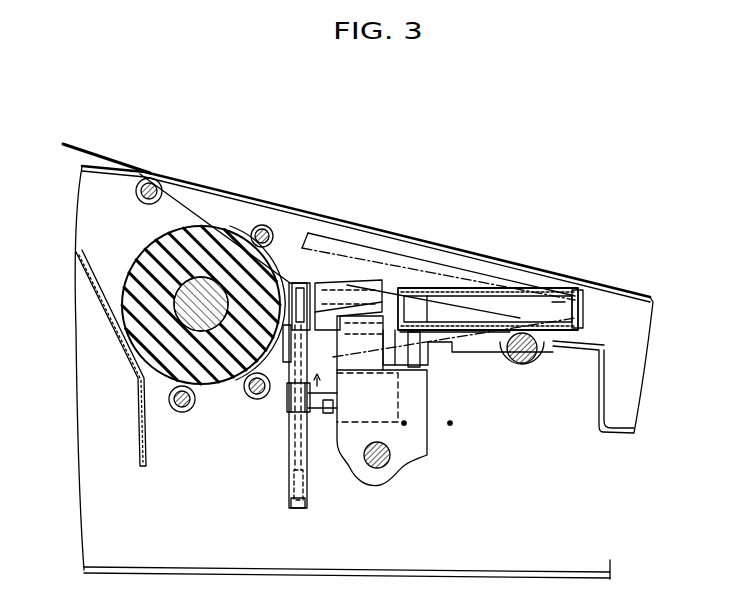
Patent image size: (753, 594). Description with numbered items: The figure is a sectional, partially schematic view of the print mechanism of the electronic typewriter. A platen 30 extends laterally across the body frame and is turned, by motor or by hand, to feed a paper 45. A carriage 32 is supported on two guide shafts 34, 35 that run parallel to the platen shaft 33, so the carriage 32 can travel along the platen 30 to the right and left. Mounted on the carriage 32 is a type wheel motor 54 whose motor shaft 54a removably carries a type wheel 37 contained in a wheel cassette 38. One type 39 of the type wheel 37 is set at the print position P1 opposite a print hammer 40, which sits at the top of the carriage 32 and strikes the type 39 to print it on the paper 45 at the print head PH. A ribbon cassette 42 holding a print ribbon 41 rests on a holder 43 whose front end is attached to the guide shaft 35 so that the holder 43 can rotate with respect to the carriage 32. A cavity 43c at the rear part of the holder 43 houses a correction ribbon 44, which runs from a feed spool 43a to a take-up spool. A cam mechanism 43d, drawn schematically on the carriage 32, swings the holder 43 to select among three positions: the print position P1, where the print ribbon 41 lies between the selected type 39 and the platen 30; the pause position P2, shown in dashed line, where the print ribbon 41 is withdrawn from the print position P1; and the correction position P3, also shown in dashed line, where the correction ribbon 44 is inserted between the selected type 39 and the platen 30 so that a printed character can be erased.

The platen 30 is at (188, 226).
The carriage 32 is at (430, 470).
The platen shaft 33 is at (140, 268).
The guide shaft 34 is at (379, 465).
The guide shaft 35 is at (523, 364).
The type wheel 37 is at (290, 443).
The wheel cassette 38 is at (306, 502).
The type 39 is at (294, 480).
The print hammer 40 is at (340, 283).
The print ribbon 41 is at (301, 280).
The ribbon cassette 42 is at (470, 290).
The holder 43 is at (420, 347).
The feed spool 43a is at (337, 345).
The cavity 43c is at (311, 414).
The cam mechanism 43d is at (470, 355).
The correction ribbon 44 is at (284, 358).
The paper 45 is at (102, 162).
The type wheel motor 54 is at (400, 402).
The motor shaft 54a is at (320, 413).
The print head PH is at (285, 228).
The print position P1 is at (320, 226).
The pause position P2 is at (281, 338).
The correction position P3 is at (296, 275).